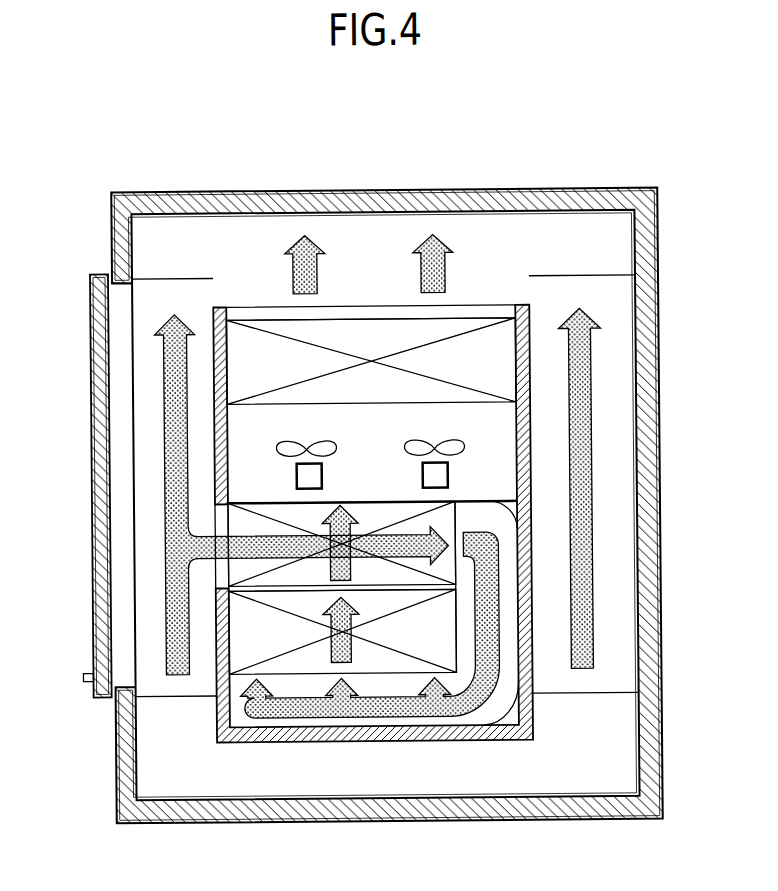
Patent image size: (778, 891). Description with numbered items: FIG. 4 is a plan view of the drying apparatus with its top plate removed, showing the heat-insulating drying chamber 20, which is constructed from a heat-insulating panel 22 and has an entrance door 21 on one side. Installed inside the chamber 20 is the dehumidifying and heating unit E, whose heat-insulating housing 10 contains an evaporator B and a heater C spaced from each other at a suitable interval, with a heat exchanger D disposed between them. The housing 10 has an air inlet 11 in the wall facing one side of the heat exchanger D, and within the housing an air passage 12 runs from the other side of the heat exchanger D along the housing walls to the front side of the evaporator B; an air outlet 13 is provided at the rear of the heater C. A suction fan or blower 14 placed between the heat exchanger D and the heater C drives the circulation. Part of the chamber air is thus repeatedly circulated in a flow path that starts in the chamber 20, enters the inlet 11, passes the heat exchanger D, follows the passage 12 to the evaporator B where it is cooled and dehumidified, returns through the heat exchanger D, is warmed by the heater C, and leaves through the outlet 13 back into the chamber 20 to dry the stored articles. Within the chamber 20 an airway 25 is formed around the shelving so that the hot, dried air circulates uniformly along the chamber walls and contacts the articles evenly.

The heat-insulating housing 10 is at (529, 481).
The air inlet 11 is at (221, 522).
The air passage 12 is at (507, 618).
The air outlet 13 is at (368, 313).
The suction fan or blower 14 is at (306, 443).
The heat-insulating drying chamber 20 is at (375, 493).
The entrance door 21 is at (95, 466).
The heat-insulating panel 22 is at (385, 190).
The airway 25 is at (215, 238).
The evaporator B is at (305, 662).
The heater C is at (457, 327).
The heat exchanger D is at (369, 518).
The dehumidifying and heating unit E is at (549, 446).